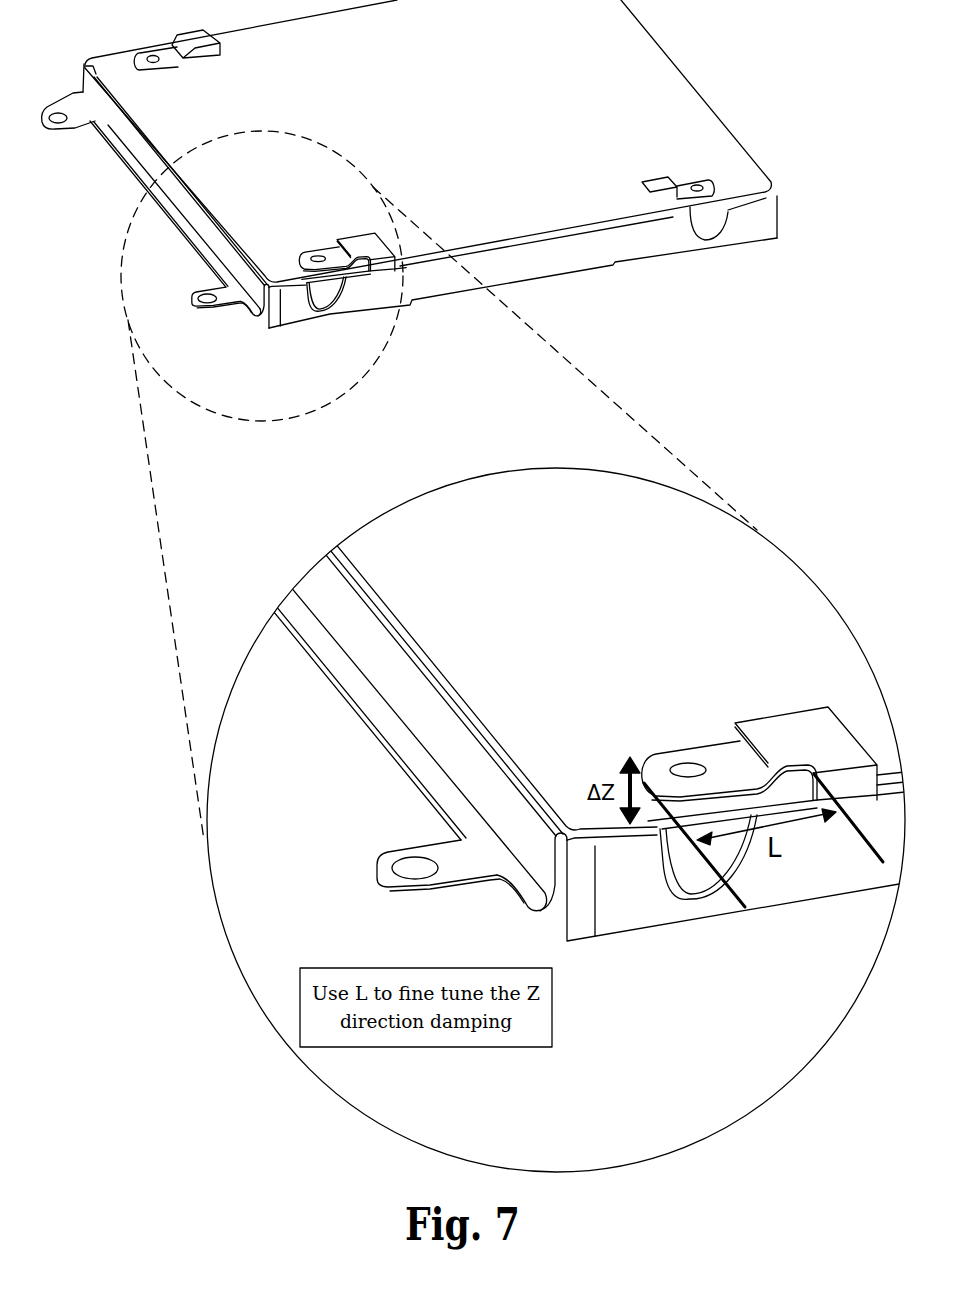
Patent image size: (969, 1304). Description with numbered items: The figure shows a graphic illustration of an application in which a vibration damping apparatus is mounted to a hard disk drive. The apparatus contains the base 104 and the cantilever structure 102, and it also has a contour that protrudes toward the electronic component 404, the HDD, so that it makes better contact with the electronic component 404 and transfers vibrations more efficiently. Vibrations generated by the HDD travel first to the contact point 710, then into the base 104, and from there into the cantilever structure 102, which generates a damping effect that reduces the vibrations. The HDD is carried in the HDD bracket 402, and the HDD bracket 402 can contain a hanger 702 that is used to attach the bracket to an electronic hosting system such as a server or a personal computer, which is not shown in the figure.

The cantilever structure 102 is at (827, 746).
The base 104 is at (477, 771).
The HDD bracket 402 is at (607, 977).
The electronic component 404 is at (506, 107).
The hanger 702 is at (458, 872).
The contact point 710 is at (690, 868).